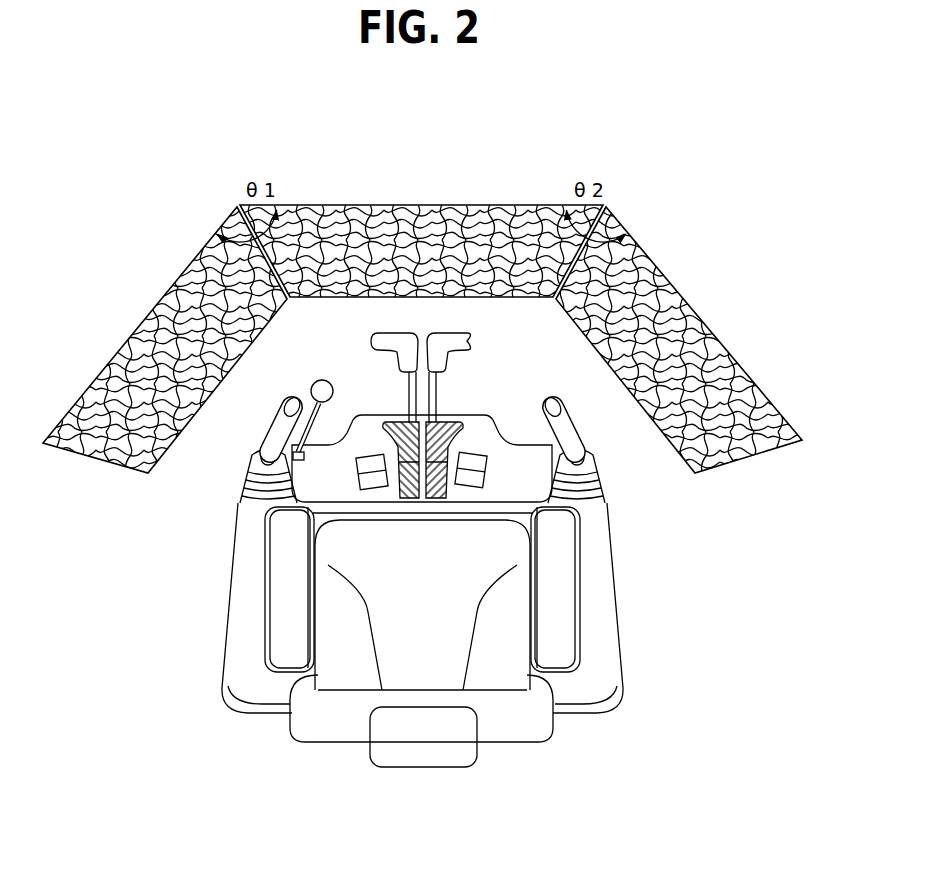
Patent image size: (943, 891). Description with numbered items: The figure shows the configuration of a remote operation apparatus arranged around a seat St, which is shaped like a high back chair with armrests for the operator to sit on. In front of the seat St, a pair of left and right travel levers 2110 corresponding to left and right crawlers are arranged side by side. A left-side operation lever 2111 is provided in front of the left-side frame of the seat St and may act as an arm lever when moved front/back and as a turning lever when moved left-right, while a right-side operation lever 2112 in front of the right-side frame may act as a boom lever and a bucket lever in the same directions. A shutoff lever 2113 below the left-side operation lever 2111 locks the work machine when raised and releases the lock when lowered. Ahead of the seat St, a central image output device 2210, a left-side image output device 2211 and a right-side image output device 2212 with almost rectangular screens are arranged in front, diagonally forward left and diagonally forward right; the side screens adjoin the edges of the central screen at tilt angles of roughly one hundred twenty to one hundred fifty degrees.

The central image output device 2210 is at (412, 190).
The left-side image output device 2211 is at (142, 296).
The right-side image output device 2212 is at (704, 296).
The travel levers 2110 is at (456, 310).
The left-side operation lever 2111 is at (262, 423).
The right-side operation lever 2112 is at (549, 382).
The shutoff lever 2113 is at (332, 361).
The seat St is at (508, 615).